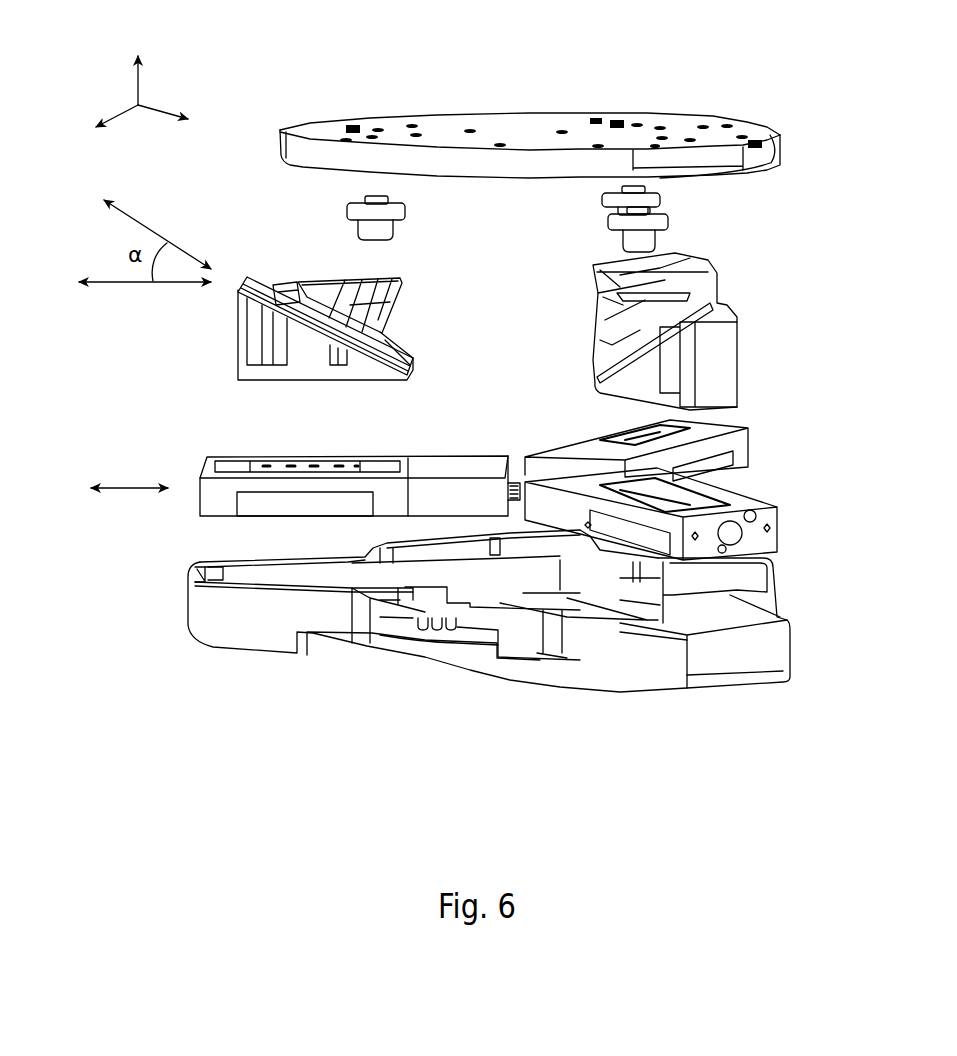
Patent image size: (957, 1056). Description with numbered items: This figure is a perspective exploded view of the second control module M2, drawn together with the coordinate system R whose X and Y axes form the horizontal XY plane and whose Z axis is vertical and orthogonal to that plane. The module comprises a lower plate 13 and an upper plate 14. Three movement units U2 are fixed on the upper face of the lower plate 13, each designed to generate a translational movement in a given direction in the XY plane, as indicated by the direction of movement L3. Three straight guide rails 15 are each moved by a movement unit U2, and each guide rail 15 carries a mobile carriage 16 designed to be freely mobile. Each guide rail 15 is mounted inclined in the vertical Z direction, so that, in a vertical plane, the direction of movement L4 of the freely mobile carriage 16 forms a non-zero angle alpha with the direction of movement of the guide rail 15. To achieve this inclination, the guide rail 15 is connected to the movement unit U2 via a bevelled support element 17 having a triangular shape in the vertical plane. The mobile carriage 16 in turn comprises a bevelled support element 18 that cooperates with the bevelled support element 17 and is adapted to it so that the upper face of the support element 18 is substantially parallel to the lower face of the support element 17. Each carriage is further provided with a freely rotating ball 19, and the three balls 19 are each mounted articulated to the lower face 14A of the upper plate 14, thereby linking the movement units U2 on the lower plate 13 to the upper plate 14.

The lower plate 13 is at (476, 667).
The upper plate 14 is at (770, 152).
The lower face of the upper plate 14A is at (745, 181).
The straight guide rail 15 is at (728, 268).
The mobile carriage 16 is at (316, 262).
The bevelled support element 17 is at (243, 348).
The bevelled support element 18 is at (400, 312).
The ball 19 is at (424, 213).
The movement unit U2 is at (263, 447).
The second control module M2 is at (165, 606).
The direction of movement L3 is at (130, 284).
The direction of movement of the mobile carriage L4 is at (143, 220).
The coordinate system R is at (118, 62).